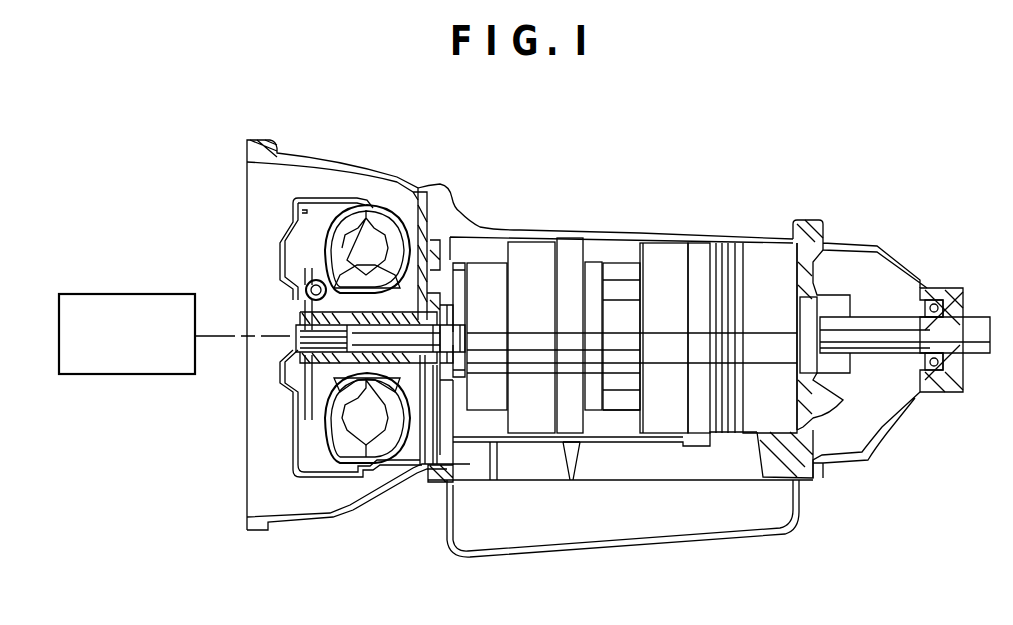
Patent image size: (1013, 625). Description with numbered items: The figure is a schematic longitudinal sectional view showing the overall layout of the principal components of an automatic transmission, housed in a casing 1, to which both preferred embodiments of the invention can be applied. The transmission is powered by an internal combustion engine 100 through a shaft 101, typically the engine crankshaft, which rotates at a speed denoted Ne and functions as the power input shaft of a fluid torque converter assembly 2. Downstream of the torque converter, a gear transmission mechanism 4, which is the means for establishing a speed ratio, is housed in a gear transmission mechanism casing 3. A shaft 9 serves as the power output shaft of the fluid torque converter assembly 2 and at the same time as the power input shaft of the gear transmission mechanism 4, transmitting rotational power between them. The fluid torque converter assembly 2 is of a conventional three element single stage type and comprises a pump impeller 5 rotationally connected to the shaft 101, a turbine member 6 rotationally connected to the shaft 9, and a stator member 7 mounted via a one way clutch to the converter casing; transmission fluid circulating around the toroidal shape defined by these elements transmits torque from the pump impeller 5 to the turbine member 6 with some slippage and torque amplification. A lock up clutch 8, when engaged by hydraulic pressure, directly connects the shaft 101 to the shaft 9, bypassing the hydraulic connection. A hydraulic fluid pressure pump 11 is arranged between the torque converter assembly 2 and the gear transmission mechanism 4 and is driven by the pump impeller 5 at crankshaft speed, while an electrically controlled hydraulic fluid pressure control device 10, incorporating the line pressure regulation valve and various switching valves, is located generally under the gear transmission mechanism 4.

The casing 1 is at (362, 165).
The fluid torque converter assembly 2 is at (390, 202).
The gear transmission mechanism casing 3 is at (640, 231).
The gear transmission mechanism 4 is at (670, 260).
The pump impeller 5 is at (403, 228).
The turbine member 6 is at (338, 222).
The stator member 7 is at (296, 330).
The lock up clutch 8 is at (298, 254).
The shaft 9 is at (453, 334).
The hydraulic fluid pressure control device 10 is at (651, 530).
The hydraulic fluid pressure pump 11 is at (430, 300).
The internal combustion engine 100 is at (141, 294).
The shaft 101 is at (204, 340).